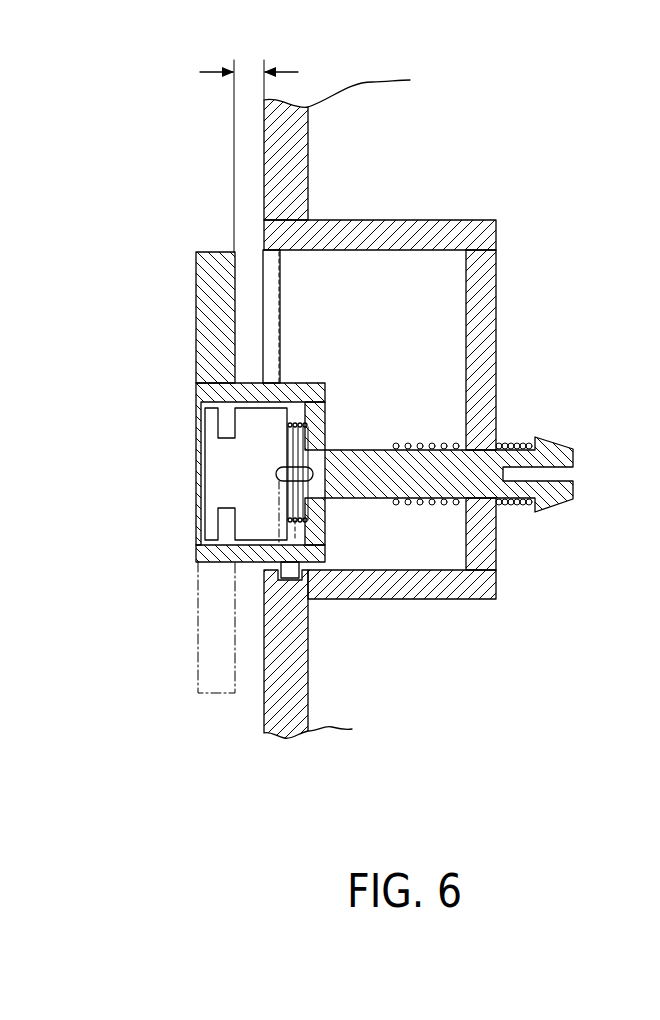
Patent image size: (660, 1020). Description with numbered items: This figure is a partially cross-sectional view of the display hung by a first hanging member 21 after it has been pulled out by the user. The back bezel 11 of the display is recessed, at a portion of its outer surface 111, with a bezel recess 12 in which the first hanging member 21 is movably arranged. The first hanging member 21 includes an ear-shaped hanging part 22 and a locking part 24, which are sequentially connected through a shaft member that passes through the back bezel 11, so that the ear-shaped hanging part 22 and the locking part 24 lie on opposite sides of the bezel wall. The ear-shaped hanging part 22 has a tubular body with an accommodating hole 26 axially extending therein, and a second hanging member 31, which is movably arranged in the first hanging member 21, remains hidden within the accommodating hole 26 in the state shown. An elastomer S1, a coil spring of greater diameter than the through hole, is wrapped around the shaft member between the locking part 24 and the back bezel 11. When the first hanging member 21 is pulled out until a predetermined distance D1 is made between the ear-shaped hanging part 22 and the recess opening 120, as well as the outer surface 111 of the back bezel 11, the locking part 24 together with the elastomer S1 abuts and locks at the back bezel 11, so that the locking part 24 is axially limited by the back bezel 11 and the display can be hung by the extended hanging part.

The back bezel 11 is at (295, 140).
The outer surface 111 is at (262, 706).
The bezel recess 12 is at (436, 279).
The recess opening 120 is at (263, 284).
The first hanging member 21 is at (197, 371).
The ear-shaped hanging part 22 is at (197, 323).
The locking part 24 is at (555, 450).
The accommodating hole 26 is at (303, 542).
The second hanging member 31 is at (197, 437).
The elastomer S1 is at (522, 443).
The predetermined distance D1 is at (249, 141).